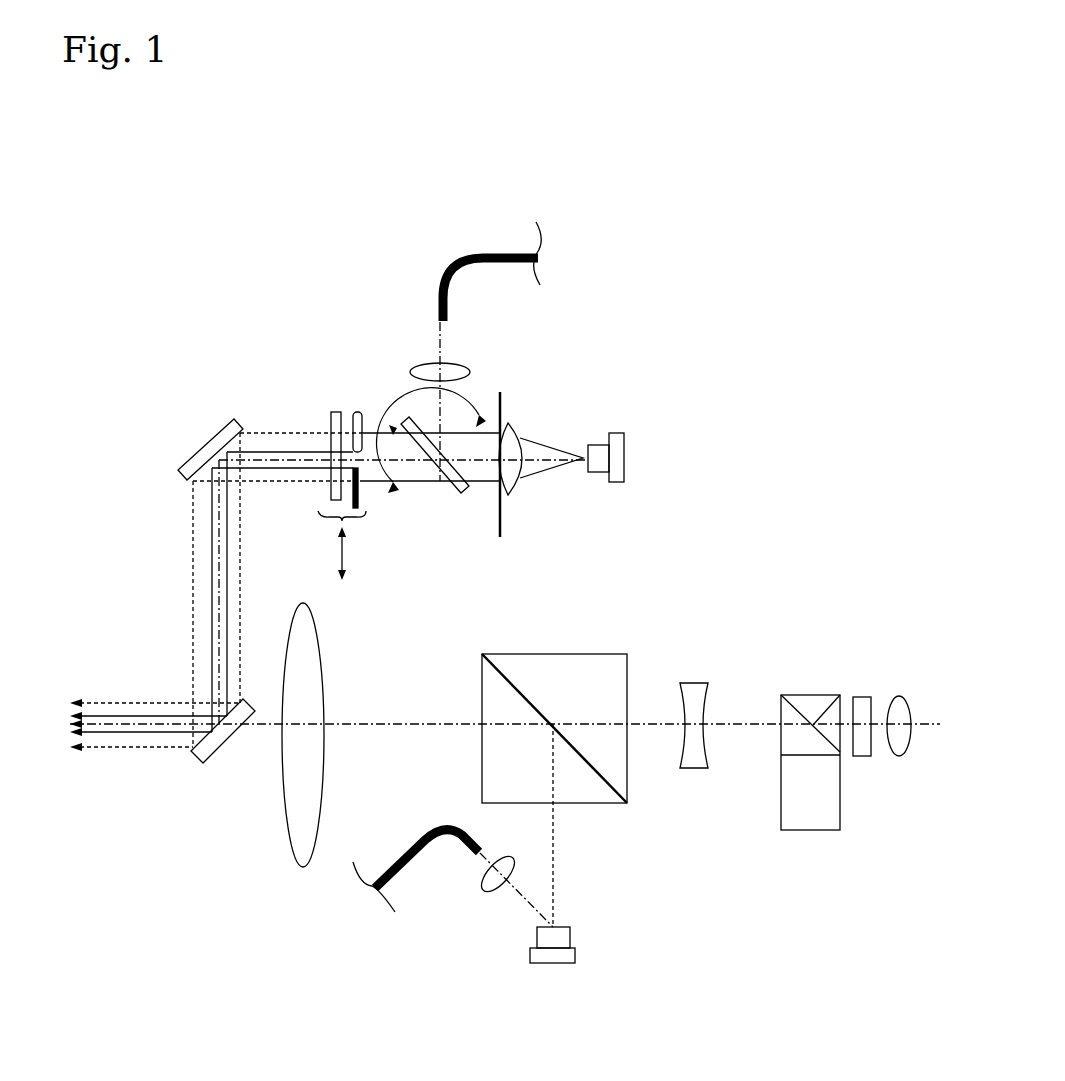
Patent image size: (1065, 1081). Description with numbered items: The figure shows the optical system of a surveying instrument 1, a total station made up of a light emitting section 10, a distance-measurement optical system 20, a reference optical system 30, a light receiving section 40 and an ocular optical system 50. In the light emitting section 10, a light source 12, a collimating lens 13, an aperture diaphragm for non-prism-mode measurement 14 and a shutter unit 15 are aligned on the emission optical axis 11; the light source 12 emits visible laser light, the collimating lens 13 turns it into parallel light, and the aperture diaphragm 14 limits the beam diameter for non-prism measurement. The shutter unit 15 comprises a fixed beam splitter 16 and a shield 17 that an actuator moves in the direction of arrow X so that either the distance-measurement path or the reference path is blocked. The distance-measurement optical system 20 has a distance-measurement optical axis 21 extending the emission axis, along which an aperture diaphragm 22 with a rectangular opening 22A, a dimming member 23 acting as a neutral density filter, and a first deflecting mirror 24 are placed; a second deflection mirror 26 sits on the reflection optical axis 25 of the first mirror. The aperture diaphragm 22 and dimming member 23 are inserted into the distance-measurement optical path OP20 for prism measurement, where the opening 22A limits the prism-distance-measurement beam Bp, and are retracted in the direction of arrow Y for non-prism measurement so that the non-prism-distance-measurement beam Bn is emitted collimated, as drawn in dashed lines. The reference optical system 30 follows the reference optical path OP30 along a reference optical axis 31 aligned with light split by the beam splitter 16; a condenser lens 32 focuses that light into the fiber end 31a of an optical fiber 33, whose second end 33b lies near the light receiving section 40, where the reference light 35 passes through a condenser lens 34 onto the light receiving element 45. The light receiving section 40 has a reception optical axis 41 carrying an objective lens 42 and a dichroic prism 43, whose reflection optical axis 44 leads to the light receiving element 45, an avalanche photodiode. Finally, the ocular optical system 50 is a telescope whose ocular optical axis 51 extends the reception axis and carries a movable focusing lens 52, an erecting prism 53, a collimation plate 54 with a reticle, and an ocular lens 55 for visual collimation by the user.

The surveying instrument 1 is at (104, 410).
The light emitting section 10 is at (609, 378).
The emission optical axis 11 is at (578, 462).
The light source 12 is at (616, 484).
The collimating lens 13 is at (517, 492).
The aperture diaphragm for non-prism-mode measurement 14 is at (502, 405).
The shutter unit 15 is at (431, 475).
The beam splitter 16 is at (441, 488).
The shield 17 is at (485, 425).
The distance-measurement optical system 20 is at (193, 348).
The distance-measurement optical axis 21 is at (290, 452).
The aperture diaphragm for prism-mode measurement 22 is at (358, 412).
The opening 22A is at (360, 412).
The dimming member 23 is at (336, 412).
The first deflecting mirror 24 is at (233, 419).
The reflection optical axis 25 is at (212, 570).
The second deflection mirror 26 is at (200, 765).
The reference optical system 30 is at (410, 292).
The reference optical axis 31 is at (504, 350).
The fiber end face 31a is at (443, 320).
The condenser lens 32 is at (470, 372).
The optical fiber 33 is at (500, 267).
The second end 33b is at (487, 855).
The condenser lens 34 is at (487, 893).
The optical path 35 is at (525, 905).
The light receiving section 40 is at (672, 888).
The reception optical axis 41 is at (400, 722).
The objective lens 42 is at (325, 630).
The dichroic prism 43 is at (582, 654).
The reflection optical axis 44 is at (555, 852).
The light receiving element 45 is at (566, 930).
The ocular optical system 50 is at (788, 585).
The ocular optical axis 51 is at (750, 722).
The focusing lens 52 is at (707, 693).
The erecting prism 53 is at (785, 700).
The collimation plate 54 is at (866, 697).
The ocular lens 55 is at (906, 697).
The distance-measurement optical path OP20 is at (266, 348).
The optical path OP30 is at (430, 260).
The non-prism-distance-measurement beam Bn is at (115, 700).
The prism-distance-measurement beam Bp is at (148, 734).
The arrow X is at (389, 512).
The arrow Y is at (332, 553).